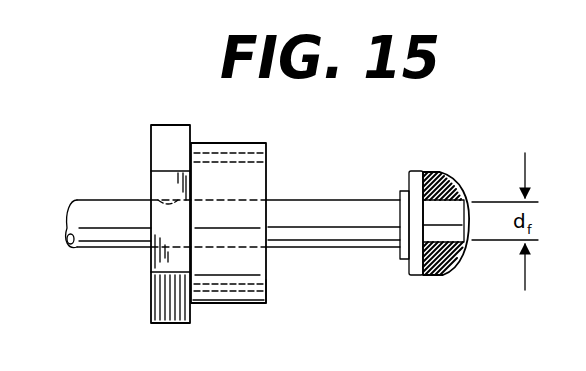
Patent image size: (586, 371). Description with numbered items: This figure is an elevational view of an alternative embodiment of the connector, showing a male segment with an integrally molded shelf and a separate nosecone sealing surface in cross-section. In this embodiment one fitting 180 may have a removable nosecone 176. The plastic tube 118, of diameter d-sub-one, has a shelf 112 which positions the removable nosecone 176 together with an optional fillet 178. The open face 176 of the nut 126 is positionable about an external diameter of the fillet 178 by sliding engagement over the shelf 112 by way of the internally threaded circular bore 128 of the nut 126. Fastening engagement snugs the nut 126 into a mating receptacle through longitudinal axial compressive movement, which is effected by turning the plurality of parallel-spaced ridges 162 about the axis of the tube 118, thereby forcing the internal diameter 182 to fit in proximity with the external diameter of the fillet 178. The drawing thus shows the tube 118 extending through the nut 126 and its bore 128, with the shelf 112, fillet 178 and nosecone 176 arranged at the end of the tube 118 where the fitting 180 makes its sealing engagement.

The shelf 112 is at (415, 277).
The plastic tube 118 is at (100, 248).
The nut 126 is at (171, 112).
The internally threaded circular bore 128 is at (268, 168).
The plurality of parallel-spaced ridges 162 is at (162, 325).
The removable nosecone 176 is at (266, 285).
The fillet 178 is at (400, 262).
The fitting 180 is at (440, 162).
The internal diameter 182 is at (148, 192).